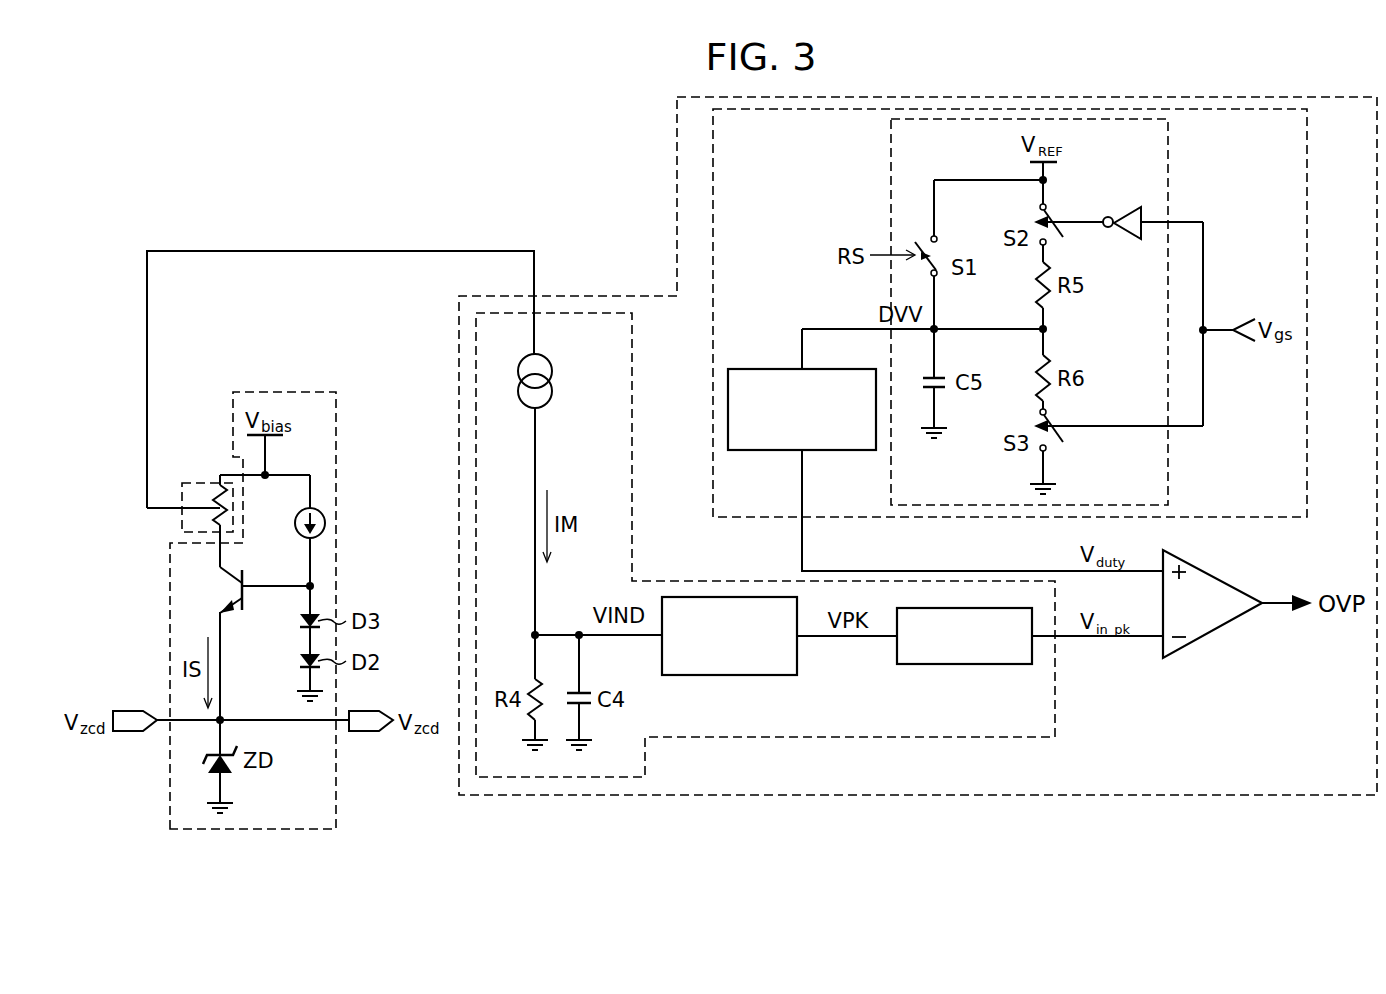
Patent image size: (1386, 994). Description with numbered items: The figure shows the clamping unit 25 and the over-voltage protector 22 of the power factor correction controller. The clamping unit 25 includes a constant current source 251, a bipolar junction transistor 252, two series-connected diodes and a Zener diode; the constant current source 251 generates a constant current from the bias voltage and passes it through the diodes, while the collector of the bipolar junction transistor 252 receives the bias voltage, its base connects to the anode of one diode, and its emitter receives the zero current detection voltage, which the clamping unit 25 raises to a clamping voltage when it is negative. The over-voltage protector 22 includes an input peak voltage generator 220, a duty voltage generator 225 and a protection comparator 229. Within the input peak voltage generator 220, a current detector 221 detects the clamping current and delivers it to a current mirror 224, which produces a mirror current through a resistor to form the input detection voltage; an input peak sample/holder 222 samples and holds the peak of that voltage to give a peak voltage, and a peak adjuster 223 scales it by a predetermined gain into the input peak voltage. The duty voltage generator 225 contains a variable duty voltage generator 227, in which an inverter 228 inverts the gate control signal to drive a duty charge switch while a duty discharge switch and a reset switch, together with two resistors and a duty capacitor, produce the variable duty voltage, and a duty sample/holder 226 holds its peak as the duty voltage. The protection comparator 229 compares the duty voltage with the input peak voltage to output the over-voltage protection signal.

The over-voltage protector 22 is at (970, 795).
The clamping unit 25 is at (336, 770).
The input peak voltage generator 220 is at (1055, 703).
The current detector 221 is at (198, 483).
The input peak sample/holder 222 is at (797, 663).
The peak adjuster 223 is at (980, 664).
The current mirror 224 is at (553, 391).
The duty voltage generator 225 is at (713, 487).
The duty sample/holder 226 is at (838, 450).
The variable duty voltage generator 227 is at (1168, 157).
The inverter 228 is at (1121, 239).
The protection comparator 229 is at (1221, 578).
The constant current source 251 is at (326, 524).
The bipolar junction transistor 252 is at (246, 604).